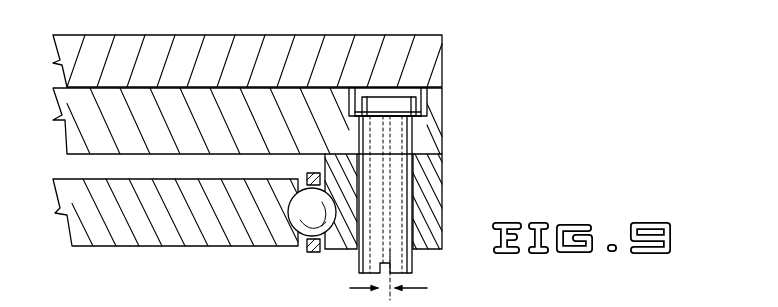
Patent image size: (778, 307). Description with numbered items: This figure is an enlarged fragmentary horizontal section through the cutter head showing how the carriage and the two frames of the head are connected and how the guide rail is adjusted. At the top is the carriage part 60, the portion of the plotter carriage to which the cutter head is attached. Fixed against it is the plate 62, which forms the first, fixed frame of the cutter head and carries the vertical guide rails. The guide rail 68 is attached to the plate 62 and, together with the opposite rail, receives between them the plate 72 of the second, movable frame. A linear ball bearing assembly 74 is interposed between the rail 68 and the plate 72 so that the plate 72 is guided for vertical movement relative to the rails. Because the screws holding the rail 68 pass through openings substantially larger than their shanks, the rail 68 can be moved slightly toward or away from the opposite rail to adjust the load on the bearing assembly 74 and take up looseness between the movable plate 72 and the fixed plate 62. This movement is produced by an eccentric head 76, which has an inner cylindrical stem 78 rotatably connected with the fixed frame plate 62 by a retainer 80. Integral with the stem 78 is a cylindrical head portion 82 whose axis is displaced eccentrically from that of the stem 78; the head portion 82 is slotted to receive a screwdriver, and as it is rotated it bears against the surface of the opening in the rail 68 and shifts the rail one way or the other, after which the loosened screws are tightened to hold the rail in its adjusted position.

The carriage part 60 is at (433, 60).
The plate 62 is at (430, 138).
The vertical guide rail 68 is at (433, 207).
The plate 72 is at (232, 246).
The linear ball bearing assembly 74 is at (310, 232).
The eccentric head 76 is at (417, 275).
The inner cylindrical stem 78 is at (400, 100).
The retainer 80 is at (412, 111).
The cylindrical head portion 82 is at (403, 180).